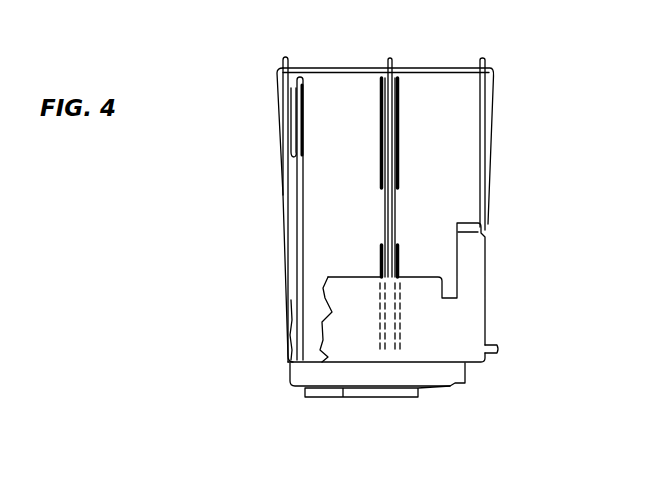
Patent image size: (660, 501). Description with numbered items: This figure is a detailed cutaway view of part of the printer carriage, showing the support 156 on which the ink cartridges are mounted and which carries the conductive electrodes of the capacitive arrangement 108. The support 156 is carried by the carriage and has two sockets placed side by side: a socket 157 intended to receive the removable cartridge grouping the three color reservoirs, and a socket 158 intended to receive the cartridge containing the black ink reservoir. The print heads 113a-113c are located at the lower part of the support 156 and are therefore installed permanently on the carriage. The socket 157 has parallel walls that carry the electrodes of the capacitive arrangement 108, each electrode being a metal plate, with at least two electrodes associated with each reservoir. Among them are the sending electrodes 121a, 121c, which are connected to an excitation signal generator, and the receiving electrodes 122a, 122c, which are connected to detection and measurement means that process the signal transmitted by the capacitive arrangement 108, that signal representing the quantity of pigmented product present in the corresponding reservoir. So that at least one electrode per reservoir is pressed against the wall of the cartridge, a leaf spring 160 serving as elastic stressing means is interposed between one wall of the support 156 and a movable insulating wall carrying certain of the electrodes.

The capacitive arrangement 108 is at (372, 105).
The leaf spring 160 is at (292, 99).
The receiving electrode 122a is at (306, 123).
The receiving electrode 122c is at (380, 130).
The socket 157 is at (340, 197).
The socket 158 is at (435, 200).
The sending electrode 121c is at (380, 248).
The support 156 is at (488, 278).
The sending electrode 121a is at (305, 285).
The print heads 113a-113c is at (423, 392).